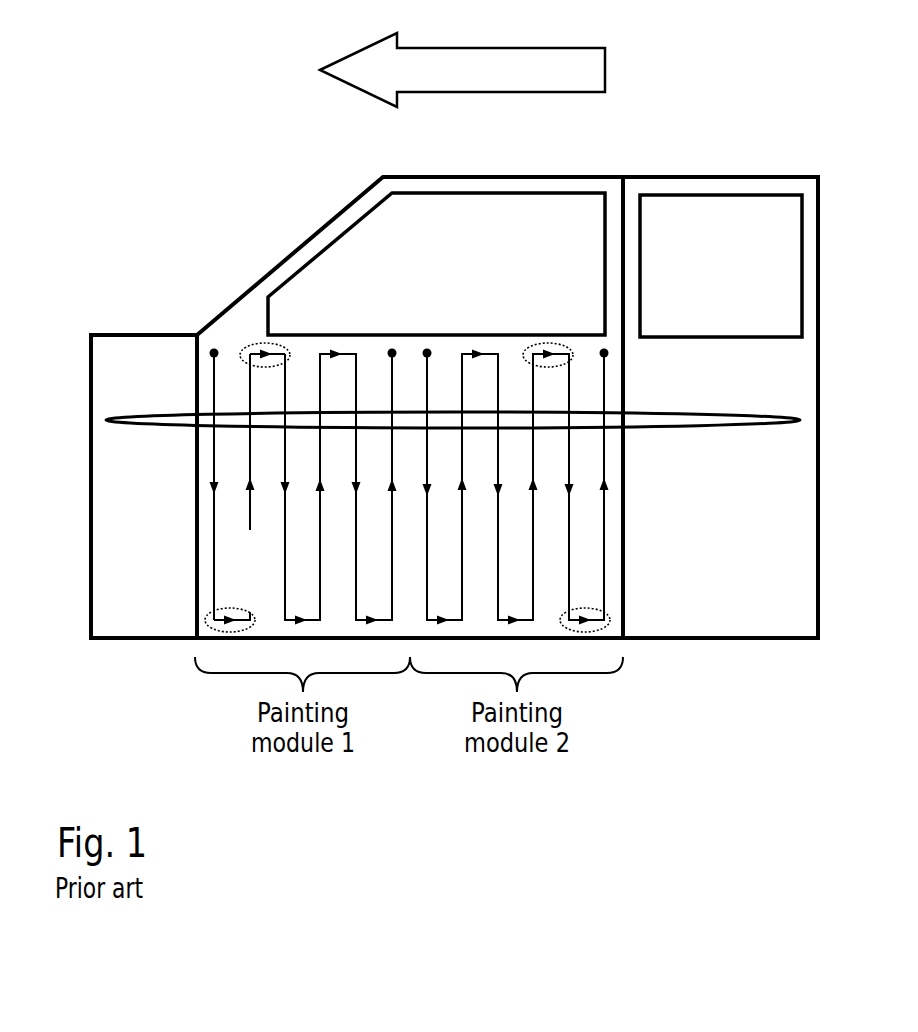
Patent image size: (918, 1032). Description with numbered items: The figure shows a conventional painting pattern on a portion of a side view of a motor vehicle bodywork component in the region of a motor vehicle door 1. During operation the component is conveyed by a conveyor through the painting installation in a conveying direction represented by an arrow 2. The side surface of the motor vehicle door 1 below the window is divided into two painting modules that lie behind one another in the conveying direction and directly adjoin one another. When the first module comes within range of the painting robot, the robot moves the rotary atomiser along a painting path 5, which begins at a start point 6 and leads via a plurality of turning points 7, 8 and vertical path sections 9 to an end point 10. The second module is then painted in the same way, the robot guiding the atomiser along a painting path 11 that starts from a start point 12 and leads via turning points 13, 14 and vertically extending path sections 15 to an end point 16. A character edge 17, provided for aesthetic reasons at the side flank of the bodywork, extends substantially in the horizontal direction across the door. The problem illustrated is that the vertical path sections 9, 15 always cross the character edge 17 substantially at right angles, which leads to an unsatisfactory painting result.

The motor vehicle door 1 is at (310, 235).
The arrow 2 is at (352, 52).
The painting path 5 is at (202, 517).
The start point 6 is at (213, 350).
The turning point 7 is at (205, 620).
The turning point 8 is at (258, 345).
The vertical path sections 9 is at (214, 567).
The end point 10 is at (392, 351).
The painting path 11 is at (615, 448).
The start point 12 is at (427, 351).
The turning point 13 is at (560, 348).
The turning point 14 is at (612, 621).
The vertically extending path sections 15 is at (606, 531).
The end point 16 is at (605, 354).
The character edge 17 is at (175, 417).